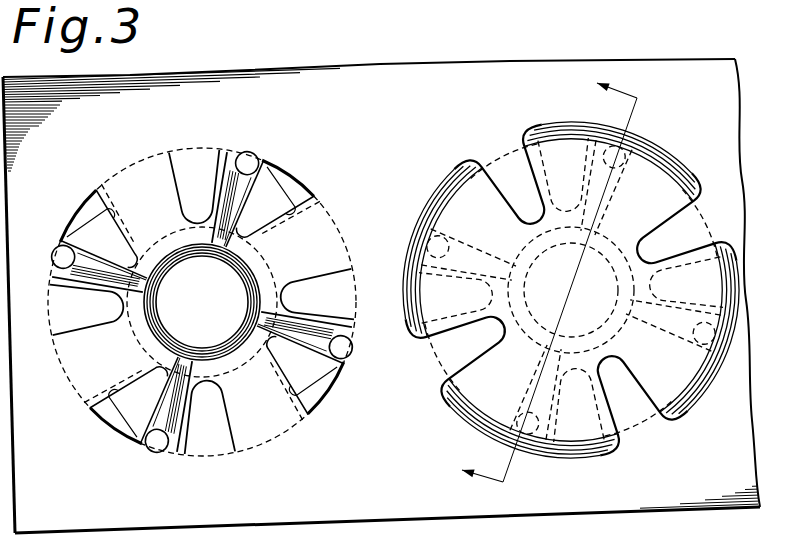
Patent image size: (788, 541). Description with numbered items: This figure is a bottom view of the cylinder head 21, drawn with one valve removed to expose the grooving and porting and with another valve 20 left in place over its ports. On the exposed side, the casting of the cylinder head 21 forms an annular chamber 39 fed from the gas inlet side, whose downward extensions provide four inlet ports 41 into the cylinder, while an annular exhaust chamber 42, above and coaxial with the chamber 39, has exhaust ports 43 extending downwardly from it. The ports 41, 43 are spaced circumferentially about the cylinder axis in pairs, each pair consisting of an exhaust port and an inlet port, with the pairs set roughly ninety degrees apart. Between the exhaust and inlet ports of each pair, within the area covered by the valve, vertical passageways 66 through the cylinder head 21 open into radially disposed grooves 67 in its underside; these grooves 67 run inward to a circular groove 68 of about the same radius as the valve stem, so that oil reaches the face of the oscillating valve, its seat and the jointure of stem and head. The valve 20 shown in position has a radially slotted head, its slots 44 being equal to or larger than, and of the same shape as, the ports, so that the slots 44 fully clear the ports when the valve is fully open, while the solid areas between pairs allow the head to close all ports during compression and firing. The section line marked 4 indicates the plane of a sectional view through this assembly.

The section line 4- 4 is at (555, 289).
The valve 20 is at (565, 290).
The cylinder head 21 is at (272, 92).
The annular chamber 39 is at (345, 222).
The inlet ports 41 is at (193, 160).
The annular exhaust chamber 42 is at (353, 250).
The exhaust ports 43 is at (97, 207).
The slots 44 is at (475, 160).
The passageways 66 is at (248, 163).
The grooves 67 is at (72, 283).
The circular groove 68 is at (227, 262).